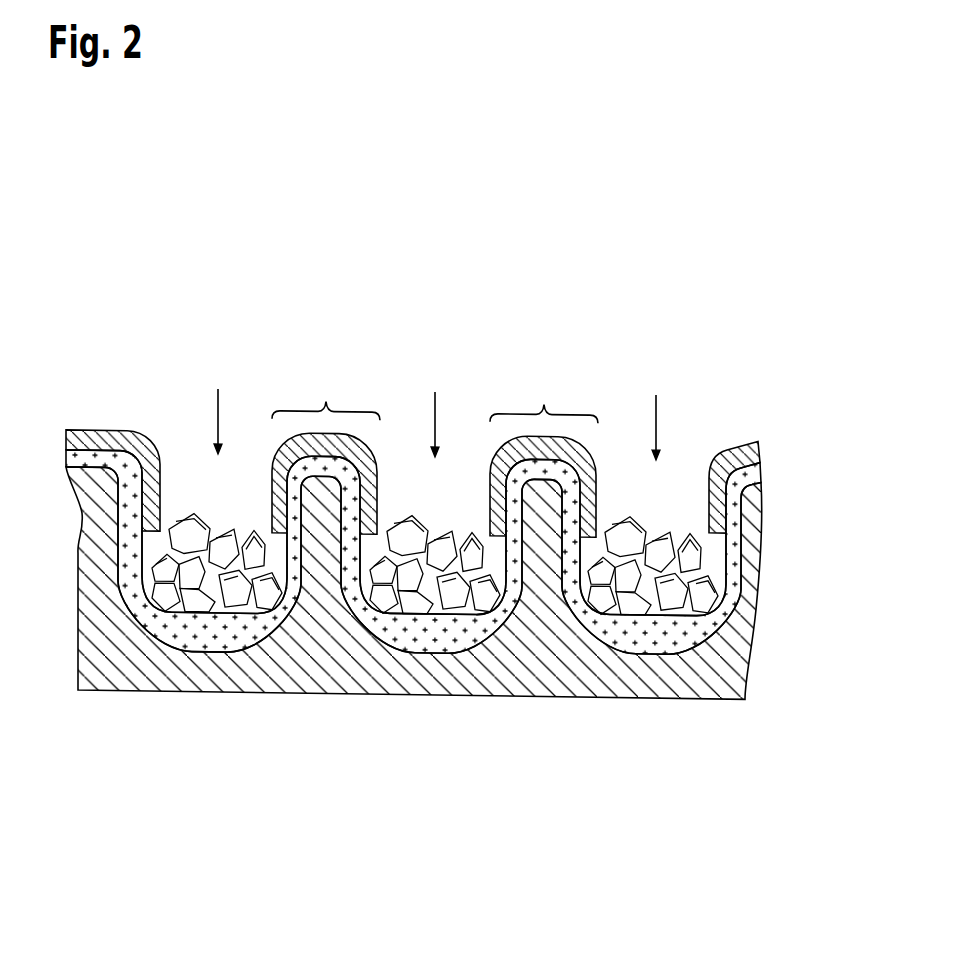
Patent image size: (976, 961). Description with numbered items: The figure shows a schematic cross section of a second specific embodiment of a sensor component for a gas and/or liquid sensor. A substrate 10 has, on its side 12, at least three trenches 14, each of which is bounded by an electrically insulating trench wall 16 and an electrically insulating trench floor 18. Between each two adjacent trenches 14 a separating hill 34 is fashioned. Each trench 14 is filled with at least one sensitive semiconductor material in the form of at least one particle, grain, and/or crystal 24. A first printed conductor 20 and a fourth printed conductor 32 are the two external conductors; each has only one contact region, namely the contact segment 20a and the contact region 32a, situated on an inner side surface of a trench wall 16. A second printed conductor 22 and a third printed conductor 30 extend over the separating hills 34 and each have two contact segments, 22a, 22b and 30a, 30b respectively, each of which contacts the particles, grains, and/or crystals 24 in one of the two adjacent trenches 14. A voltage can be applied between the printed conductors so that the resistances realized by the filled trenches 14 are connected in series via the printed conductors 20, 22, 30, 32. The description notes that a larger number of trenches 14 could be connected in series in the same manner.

The substrate 10 is at (130, 667).
The side of substrate 12 is at (84, 428).
The trench 14 is at (217, 415).
The trench wall 16 is at (118, 495).
The trench floor 18 is at (222, 641).
The first printed conductor 20 is at (112, 428).
The first contact segment of first printed conductor 20a is at (128, 527).
The second printed conductor 22 is at (273, 452).
The first contact segment of second printed conductor 22a is at (283, 542).
The second contact segment of second printed conductor 22b is at (350, 556).
The particle, grain, and/or crystal 24 is at (233, 535).
The third printed conductor 30 is at (490, 449).
The first contact segment of third printed conductor 30a is at (500, 539).
The second contact segment of third printed conductor 30b is at (570, 553).
The fourth printed conductor 32 is at (712, 449).
The contact region of fourth printed conductor 32a is at (740, 517).
The separating hill 34 is at (435, 393).